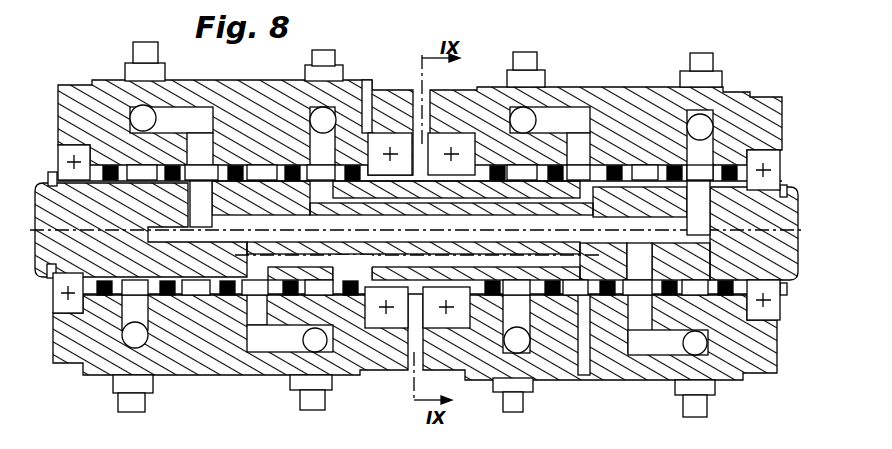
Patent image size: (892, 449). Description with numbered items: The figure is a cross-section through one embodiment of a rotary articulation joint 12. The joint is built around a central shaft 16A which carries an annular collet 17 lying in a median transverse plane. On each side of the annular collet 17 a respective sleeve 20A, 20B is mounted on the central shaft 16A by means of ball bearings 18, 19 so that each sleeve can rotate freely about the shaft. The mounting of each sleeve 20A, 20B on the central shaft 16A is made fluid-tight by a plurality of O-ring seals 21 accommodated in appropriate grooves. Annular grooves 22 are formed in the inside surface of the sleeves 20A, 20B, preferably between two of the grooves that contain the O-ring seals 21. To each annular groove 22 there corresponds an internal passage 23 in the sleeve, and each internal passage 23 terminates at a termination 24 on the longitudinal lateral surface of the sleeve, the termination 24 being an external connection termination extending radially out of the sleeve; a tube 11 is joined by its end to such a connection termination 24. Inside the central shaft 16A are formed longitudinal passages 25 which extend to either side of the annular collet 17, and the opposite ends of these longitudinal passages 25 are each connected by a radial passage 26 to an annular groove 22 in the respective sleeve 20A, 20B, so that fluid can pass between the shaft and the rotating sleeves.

The tube 11 is at (134, 46).
The rotary articulation joint 12 is at (601, 72).
The central shaft 16A is at (772, 230).
The annular collet 17 is at (420, 298).
The ball bearing 18 is at (50, 155).
The ball bearing 19 is at (390, 147).
The sleeve 20A is at (235, 105).
The sleeve 20B is at (618, 100).
The O-ring seal 21 is at (182, 330).
The annular groove 22 is at (648, 147).
The internal passage 23 is at (190, 112).
The connection termination 24 is at (126, 72).
The longitudinal passage 25 is at (270, 225).
The radial passage 26 is at (182, 147).